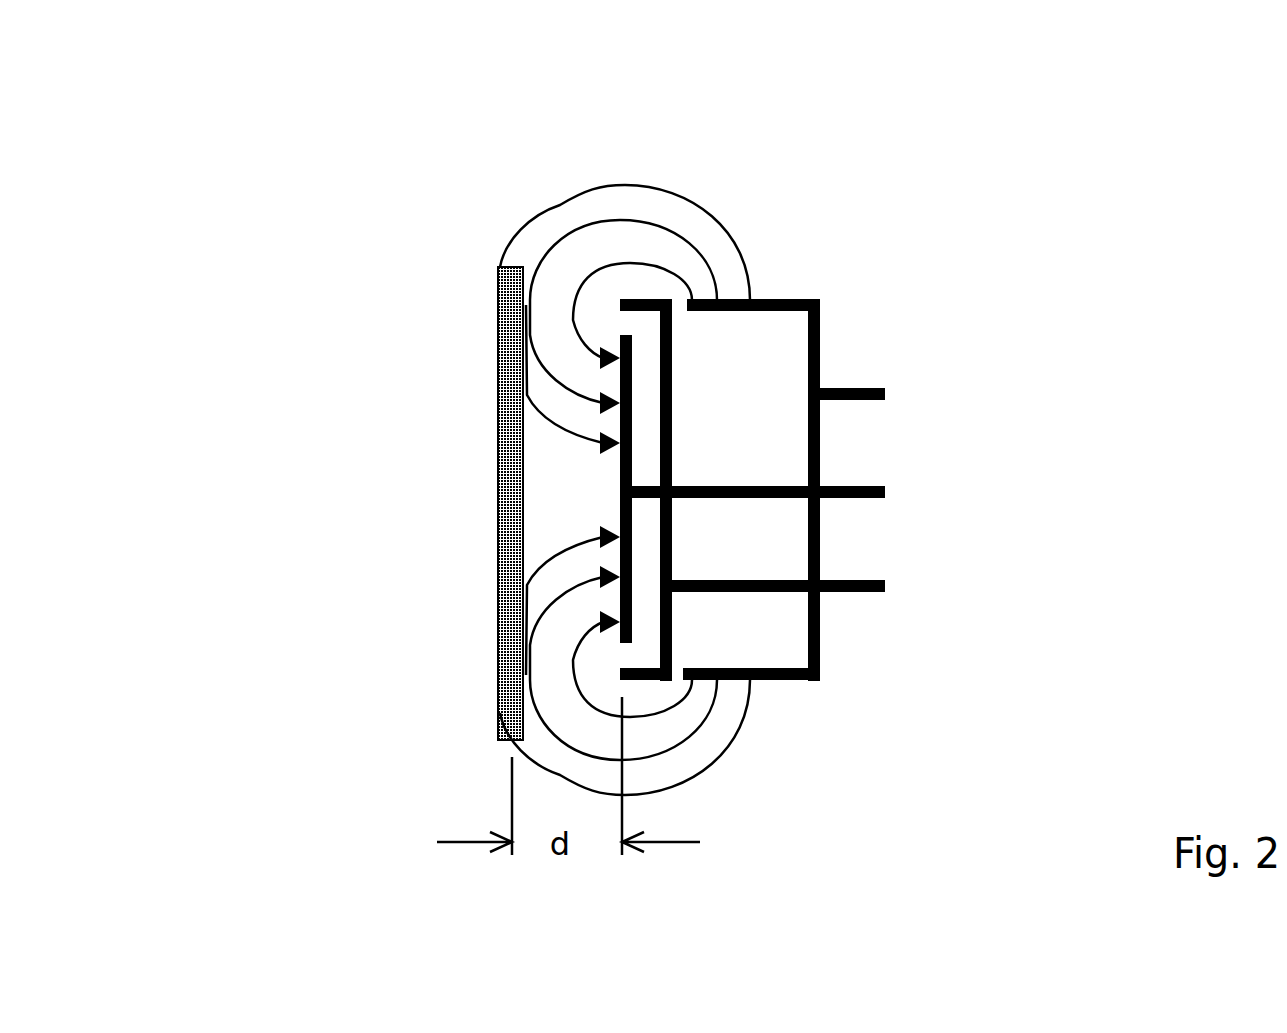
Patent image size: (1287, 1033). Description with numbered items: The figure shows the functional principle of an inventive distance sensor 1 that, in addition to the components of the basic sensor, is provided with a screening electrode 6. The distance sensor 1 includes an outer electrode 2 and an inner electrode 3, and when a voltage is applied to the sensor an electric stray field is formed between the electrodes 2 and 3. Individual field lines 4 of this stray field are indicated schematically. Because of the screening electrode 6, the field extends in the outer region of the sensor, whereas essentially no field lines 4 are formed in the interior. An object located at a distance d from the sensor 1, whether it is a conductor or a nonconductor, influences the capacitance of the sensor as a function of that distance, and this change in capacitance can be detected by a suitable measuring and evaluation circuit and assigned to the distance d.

The distance sensor 1 is at (850, 220).
The outer electrode 2 is at (818, 345).
The inner electrode 3 is at (617, 467).
The field lines 4 is at (563, 243).
The screening electrode 6 is at (640, 298).